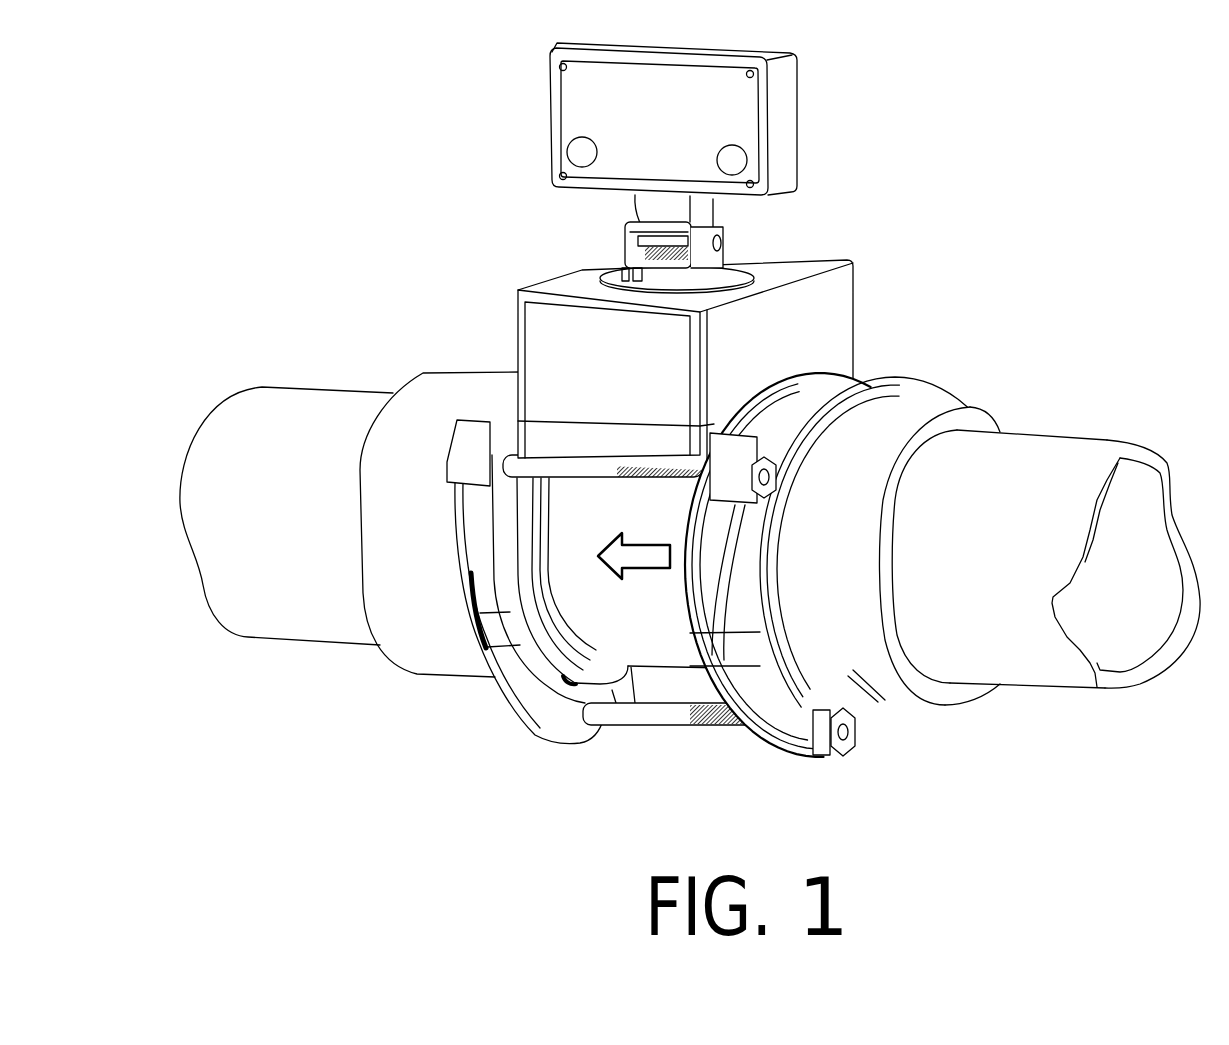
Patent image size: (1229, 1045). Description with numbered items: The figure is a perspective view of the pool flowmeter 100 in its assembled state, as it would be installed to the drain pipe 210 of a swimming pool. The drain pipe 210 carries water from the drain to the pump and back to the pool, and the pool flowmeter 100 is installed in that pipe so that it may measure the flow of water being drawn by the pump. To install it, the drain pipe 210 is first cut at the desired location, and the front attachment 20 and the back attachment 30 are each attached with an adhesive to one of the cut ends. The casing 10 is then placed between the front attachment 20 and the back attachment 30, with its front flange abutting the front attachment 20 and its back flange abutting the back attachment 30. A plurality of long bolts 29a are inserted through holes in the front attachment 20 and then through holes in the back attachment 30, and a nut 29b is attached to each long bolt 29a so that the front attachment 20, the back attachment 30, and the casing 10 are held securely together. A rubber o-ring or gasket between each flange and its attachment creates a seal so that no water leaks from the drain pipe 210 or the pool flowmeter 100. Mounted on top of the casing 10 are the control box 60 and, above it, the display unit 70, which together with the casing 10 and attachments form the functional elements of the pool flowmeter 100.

The pool flowmeter 100 is at (468, 249).
The casing 10 is at (613, 625).
The front attachment 20 is at (467, 662).
The long bolt 29a is at (657, 718).
The nut 29b is at (847, 757).
The back attachment 30 is at (850, 670).
The control box 60 is at (808, 317).
The display unit 70 is at (780, 100).
The drain pipe 210 is at (295, 457).